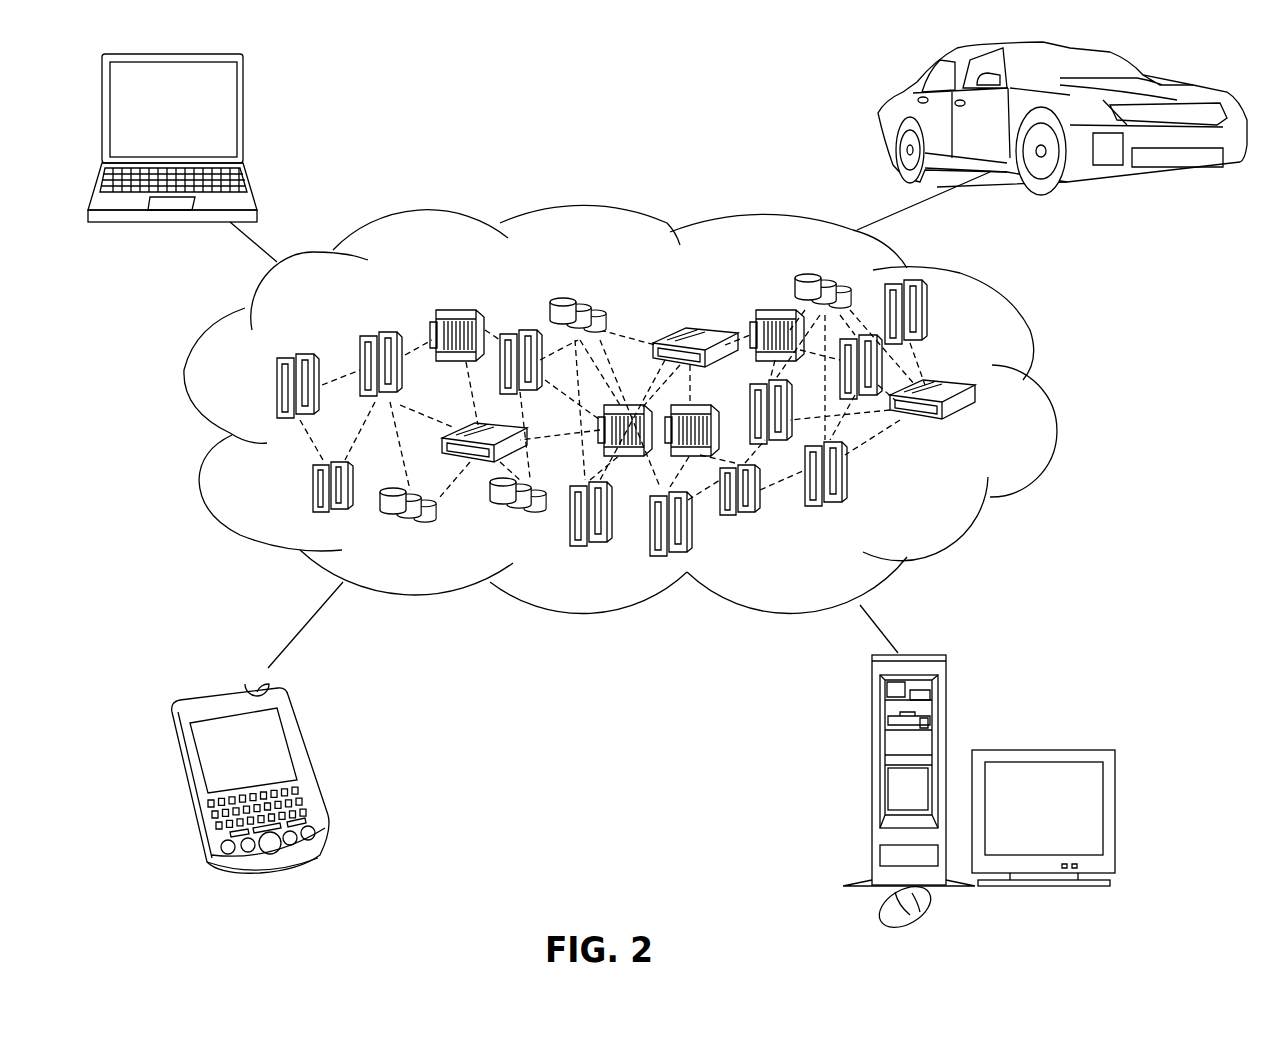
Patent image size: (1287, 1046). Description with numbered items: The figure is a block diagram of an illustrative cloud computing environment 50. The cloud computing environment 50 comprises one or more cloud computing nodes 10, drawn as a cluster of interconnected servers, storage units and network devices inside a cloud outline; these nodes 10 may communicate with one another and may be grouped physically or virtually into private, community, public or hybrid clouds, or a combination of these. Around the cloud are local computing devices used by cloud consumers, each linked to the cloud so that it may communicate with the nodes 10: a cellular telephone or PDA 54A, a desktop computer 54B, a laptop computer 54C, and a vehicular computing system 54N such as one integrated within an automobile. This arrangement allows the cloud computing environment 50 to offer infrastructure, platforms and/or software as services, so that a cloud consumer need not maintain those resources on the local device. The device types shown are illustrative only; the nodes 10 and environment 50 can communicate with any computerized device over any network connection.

The cloud computing node 10 is at (948, 499).
The cloud computing environment 50 is at (651, 409).
The cellular telephone or PDA 54A is at (300, 732).
The desktop computer 54B is at (870, 717).
The laptop computer 54C is at (245, 93).
The vehicular computing system 54N is at (888, 108).